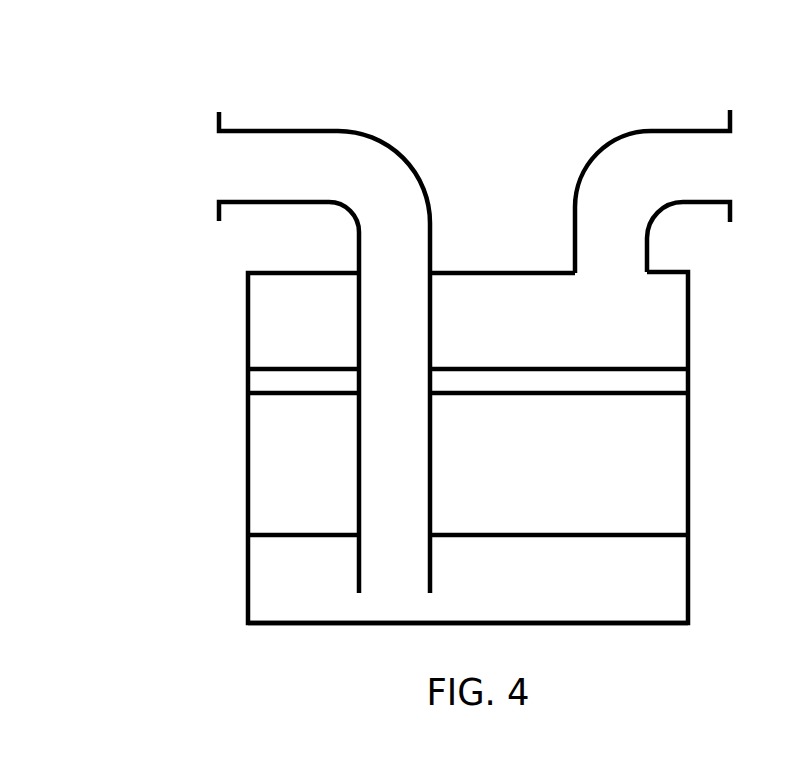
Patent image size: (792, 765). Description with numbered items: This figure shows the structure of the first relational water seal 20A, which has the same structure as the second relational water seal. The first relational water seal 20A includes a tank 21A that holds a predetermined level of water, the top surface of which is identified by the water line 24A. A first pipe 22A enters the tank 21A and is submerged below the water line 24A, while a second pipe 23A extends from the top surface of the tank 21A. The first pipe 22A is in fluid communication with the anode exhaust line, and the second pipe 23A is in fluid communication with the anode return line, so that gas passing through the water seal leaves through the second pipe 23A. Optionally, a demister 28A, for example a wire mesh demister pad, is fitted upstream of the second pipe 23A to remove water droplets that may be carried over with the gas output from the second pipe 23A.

The first relational water seal 20A is at (143, 132).
The tank 21A is at (248, 323).
The first pipe 22A is at (292, 131).
The second pipe 23A is at (696, 131).
The water line 24A is at (580, 535).
The demister 28A is at (688, 385).